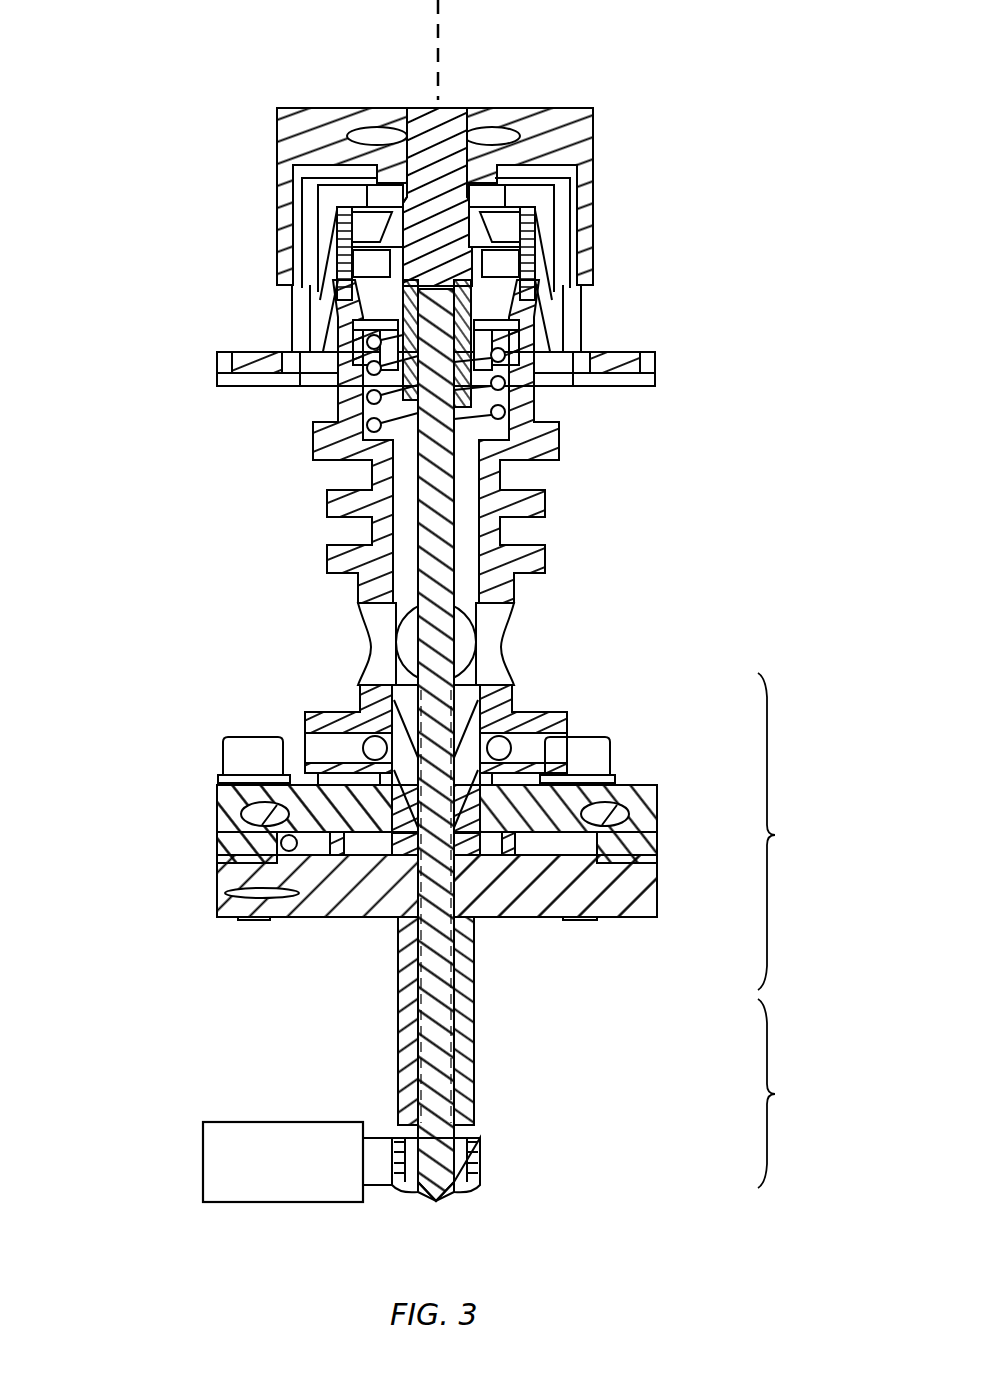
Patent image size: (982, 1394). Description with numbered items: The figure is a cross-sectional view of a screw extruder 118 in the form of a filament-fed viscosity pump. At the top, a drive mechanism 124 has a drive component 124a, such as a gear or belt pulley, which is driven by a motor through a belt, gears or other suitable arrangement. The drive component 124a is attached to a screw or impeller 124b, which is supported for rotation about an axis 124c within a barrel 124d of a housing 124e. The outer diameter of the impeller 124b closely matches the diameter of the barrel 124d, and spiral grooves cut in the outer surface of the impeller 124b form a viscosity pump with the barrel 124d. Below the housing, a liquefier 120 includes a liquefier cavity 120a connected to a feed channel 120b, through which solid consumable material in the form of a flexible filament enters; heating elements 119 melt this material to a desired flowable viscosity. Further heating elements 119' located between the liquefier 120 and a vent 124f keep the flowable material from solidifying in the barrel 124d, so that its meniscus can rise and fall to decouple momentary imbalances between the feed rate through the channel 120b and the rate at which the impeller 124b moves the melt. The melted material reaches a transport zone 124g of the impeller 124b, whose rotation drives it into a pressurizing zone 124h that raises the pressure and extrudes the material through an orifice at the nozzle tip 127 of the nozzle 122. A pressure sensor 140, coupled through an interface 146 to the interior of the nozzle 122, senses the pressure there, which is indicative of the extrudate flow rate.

The screw extruder 118 is at (180, 76).
The drive mechanism 124 is at (680, 176).
The drive component 124a is at (583, 127).
The impeller 124b is at (443, 528).
The axis 124c is at (438, 65).
The barrel 124d is at (390, 522).
The housing 124e is at (465, 977).
The vent 124f is at (472, 635).
The transport zone 124g is at (798, 831).
The pressurizing zone 124h is at (795, 1093).
The heating elements 119 is at (435, 832).
The heating elements 119' is at (486, 715).
The liquefier 120 is at (120, 875).
The liquefier cavity 120a is at (355, 870).
The feed channel 120b is at (270, 846).
The nozzle 122 is at (478, 1150).
The nozzle tip 127 is at (437, 1201).
The pressure sensor 140 is at (215, 1123).
The interface 146 is at (382, 1185).